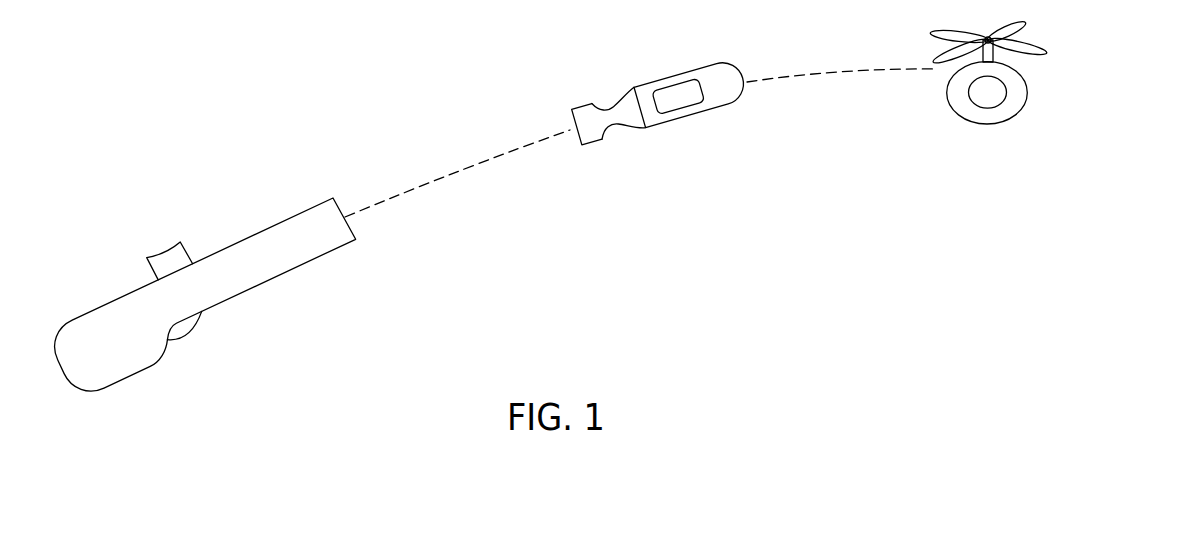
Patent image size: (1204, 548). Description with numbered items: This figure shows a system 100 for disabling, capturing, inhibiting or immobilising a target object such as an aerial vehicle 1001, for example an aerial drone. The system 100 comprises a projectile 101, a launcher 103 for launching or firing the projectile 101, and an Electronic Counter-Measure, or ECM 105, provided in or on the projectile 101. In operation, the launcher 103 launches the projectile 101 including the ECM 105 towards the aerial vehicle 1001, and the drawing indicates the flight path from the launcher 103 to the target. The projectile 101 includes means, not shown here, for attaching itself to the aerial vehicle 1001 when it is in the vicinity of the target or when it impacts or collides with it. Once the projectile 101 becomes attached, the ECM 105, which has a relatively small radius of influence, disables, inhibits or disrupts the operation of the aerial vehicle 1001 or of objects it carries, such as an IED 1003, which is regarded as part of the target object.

The system 100 is at (258, 103).
The projectile 101 is at (687, 74).
The launcher 103 is at (237, 243).
The Electronic Counter-Measure (ECM) 105 is at (717, 62).
The aerial vehicle 1001 is at (1040, 95).
The IED 1003 is at (1007, 100).